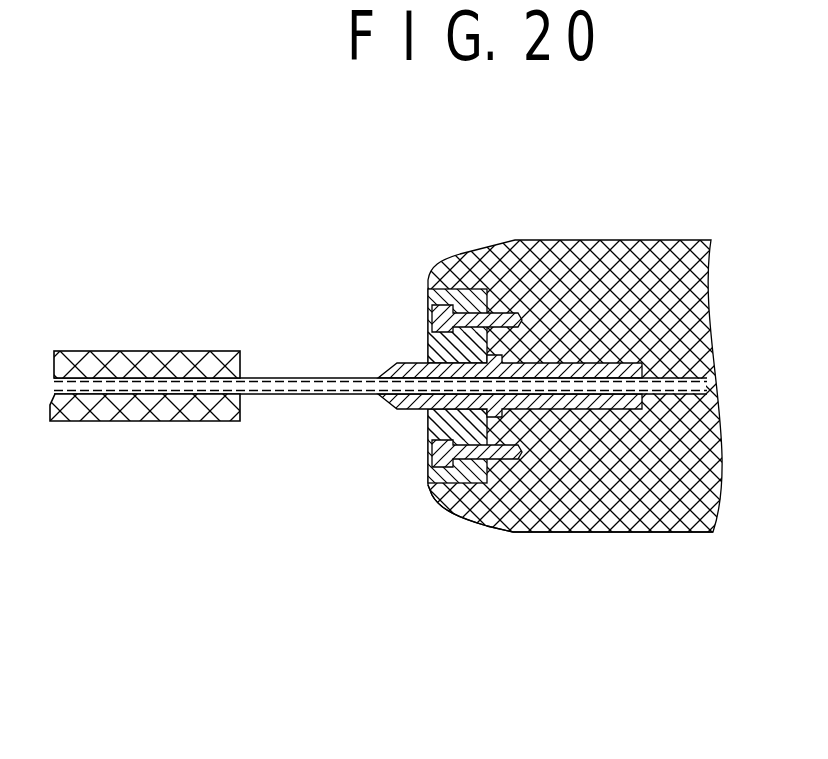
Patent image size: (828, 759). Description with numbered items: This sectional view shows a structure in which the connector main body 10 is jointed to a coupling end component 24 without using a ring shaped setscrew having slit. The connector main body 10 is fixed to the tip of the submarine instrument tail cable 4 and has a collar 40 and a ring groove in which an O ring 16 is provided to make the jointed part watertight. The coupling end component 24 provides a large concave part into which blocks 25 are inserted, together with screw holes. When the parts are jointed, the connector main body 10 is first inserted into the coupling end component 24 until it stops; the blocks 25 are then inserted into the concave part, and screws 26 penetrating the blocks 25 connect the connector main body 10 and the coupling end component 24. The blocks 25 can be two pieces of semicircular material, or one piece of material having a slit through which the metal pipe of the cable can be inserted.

The submarine instrument tail cable 4 is at (130, 351).
The connector main body 10 is at (548, 410).
The O ring 16 is at (567, 364).
The coupling end component 24 is at (672, 532).
The blocks 25 is at (428, 342).
The screws 26 is at (465, 290).
The collar 40 is at (520, 322).